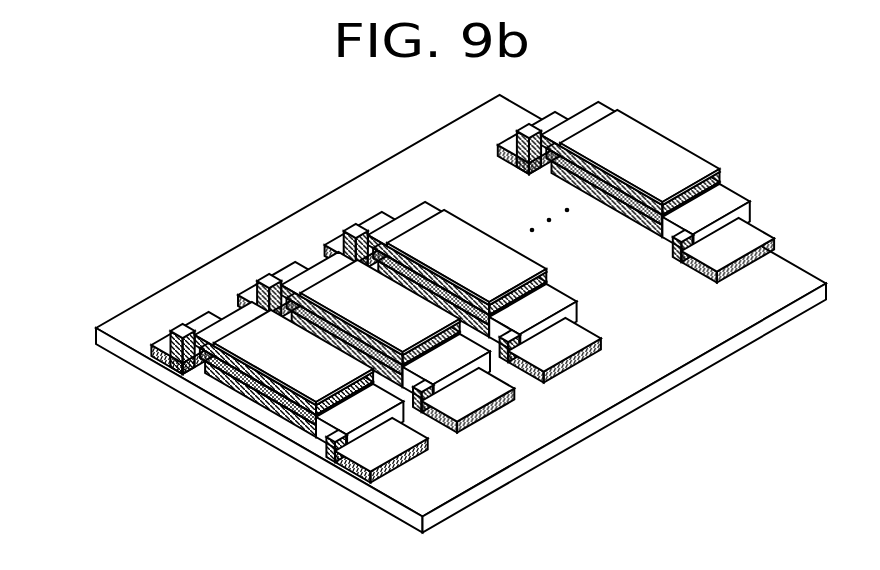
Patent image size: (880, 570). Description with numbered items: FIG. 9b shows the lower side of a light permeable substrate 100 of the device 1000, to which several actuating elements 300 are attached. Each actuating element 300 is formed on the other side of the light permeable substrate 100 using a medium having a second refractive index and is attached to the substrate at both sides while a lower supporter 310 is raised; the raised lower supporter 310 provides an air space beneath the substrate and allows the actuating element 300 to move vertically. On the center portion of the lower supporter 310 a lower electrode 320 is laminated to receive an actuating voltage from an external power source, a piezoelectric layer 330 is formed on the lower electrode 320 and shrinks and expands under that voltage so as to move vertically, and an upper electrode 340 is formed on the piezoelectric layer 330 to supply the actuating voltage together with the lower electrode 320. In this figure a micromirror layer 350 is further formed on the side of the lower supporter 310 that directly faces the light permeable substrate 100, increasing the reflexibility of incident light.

The light emitting device 1000 is at (190, 127).
The light permeable substrate 100 is at (140, 362).
The actuating element 300 is at (260, 414).
The lower supporter 310 is at (287, 440).
The lower electrode 320 is at (257, 402).
The piezoelectric layer 330 is at (217, 377).
The upper electrode 340 is at (187, 383).
The micromirror layer 350 is at (336, 468).